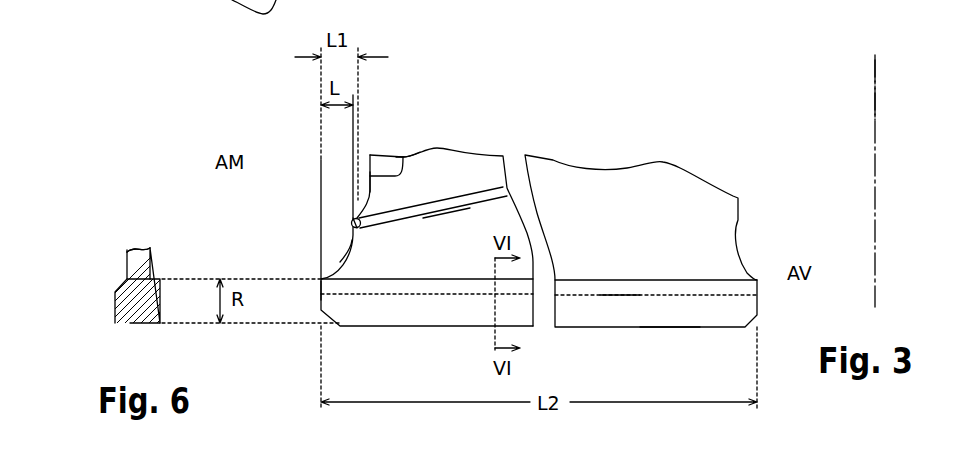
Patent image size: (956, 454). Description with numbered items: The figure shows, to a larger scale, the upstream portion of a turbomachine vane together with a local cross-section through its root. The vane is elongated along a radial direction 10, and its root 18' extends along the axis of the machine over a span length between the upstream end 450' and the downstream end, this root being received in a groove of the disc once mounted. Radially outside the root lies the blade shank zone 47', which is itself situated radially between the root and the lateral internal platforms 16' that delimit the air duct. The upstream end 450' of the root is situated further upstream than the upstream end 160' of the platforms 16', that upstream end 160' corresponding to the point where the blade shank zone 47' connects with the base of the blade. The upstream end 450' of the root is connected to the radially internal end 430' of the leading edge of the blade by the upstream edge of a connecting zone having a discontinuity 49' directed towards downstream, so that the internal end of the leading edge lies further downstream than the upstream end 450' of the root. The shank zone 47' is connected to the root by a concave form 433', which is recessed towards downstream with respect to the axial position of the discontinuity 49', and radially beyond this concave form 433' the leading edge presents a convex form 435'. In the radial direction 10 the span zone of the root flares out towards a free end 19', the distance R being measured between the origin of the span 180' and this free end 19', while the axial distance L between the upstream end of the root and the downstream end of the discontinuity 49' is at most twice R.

In FIG. 3, the radial elongation direction 10 is at (877, 64).
In FIG. 3, the lateral internal platform 16' is at (427, 208).
In FIG. 3, the root 18' is at (669, 241).
In FIG. 6, the root 18' is at (128, 312).
In FIG. 3, the free end 19' is at (670, 359).
In FIG. 3, the blade shank zone 47' is at (541, 227).
In FIG. 3, the discontinuity 49' is at (313, 245).
In FIG. 6, the discontinuity 49' is at (131, 226).
In FIG. 3, the upstream end of the lateral internal platforms 160' is at (302, 215).
In FIG. 3, the origin of the span 180' is at (614, 335).
In FIG. 6, the origin of the span 180' is at (142, 257).
In FIG. 3, the radially internal end of the leading edge 430' is at (433, 164).
In FIG. 3, the concave form 433' is at (316, 181).
In FIG. 3, the convex form 435' is at (396, 118).
In FIG. 3, the upstream end of the root 450' is at (274, 272).
In FIG. 6, the upstream end of the root 450' is at (139, 347).